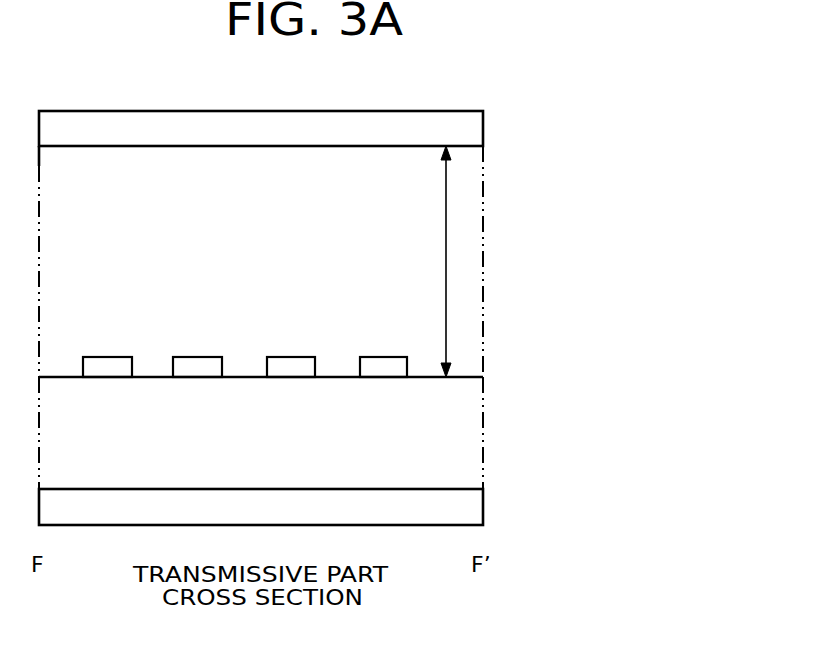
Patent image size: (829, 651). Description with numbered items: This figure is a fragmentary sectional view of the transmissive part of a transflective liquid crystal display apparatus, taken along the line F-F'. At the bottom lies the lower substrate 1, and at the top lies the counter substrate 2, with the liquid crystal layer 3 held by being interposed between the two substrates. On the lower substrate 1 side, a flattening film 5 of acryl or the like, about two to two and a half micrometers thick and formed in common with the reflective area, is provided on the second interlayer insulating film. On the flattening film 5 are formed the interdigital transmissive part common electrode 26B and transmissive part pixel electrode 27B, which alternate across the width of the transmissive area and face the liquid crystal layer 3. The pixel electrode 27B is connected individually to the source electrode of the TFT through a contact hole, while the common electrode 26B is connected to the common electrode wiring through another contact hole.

The lower substrate 1 is at (475, 505).
The counter substrate 2 is at (463, 122).
The liquid crystal layer 3 is at (467, 190).
The flattening film 5 is at (460, 433).
The transmissive part common electrode 26B is at (100, 357).
The transmissive part pixel electrode 27B is at (208, 357).